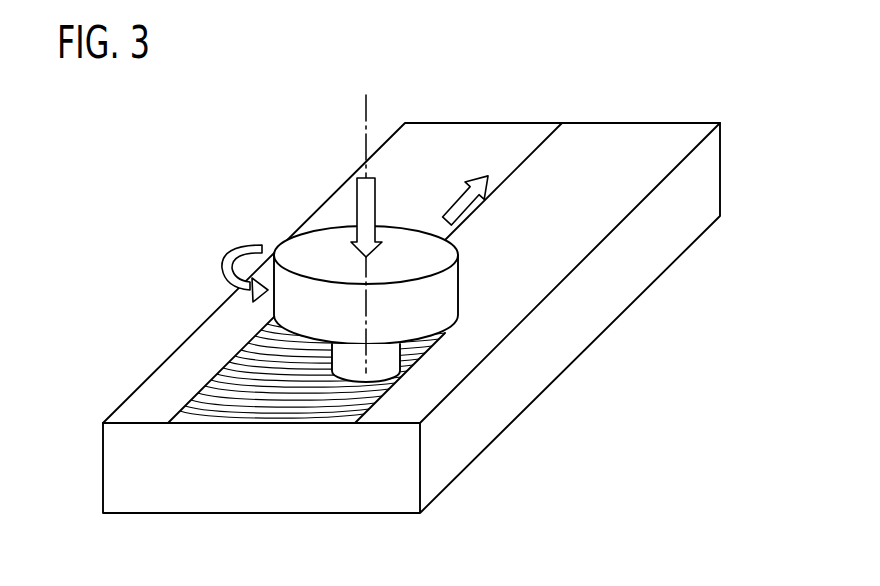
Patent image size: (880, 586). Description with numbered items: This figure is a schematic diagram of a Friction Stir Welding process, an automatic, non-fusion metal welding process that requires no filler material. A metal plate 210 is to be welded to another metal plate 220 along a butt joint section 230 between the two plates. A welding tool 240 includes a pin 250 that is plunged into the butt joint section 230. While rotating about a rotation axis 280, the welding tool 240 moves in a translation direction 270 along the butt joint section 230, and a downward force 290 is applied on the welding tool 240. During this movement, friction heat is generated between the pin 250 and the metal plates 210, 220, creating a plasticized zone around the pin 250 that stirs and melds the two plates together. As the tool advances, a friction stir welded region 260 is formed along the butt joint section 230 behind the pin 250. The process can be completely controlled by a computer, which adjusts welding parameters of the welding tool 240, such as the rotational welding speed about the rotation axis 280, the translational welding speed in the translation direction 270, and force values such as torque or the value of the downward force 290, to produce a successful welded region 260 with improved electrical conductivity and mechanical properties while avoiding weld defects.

The metal plate 210 is at (632, 140).
The metal plate 220 is at (453, 140).
The butt joint section 230 is at (525, 162).
The welding tool 240 is at (483, 285).
The pin 250 is at (387, 368).
The friction stir welded region 260 is at (242, 378).
The translation direction 270 is at (462, 212).
The rotation axis 280 is at (364, 113).
The downward force 290 is at (357, 200).